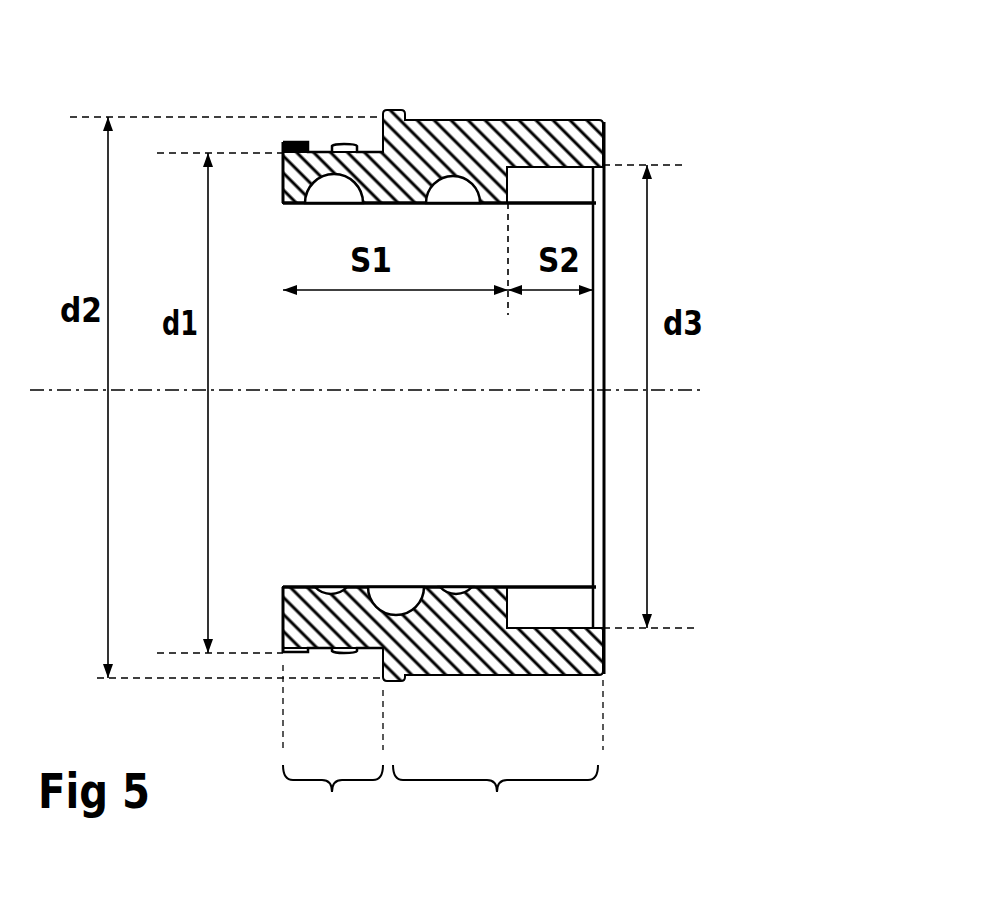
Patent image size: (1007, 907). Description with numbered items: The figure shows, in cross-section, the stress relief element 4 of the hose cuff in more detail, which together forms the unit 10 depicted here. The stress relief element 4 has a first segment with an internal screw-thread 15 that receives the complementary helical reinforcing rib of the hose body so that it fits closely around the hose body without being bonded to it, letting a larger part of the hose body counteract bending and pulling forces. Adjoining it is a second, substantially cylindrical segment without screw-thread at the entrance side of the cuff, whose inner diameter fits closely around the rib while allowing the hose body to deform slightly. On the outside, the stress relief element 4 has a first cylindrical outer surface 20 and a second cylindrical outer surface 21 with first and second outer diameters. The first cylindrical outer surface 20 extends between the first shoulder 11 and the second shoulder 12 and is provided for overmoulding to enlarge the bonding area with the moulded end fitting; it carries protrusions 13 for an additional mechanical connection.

The bearing assembly / wheel bearing unit 4 is at (726, 532).
The bearing ring unit 10 is at (573, 610).
The inner ring 11 is at (283, 163).
The outer ring flange 12 is at (383, 128).
The shoulder of inner ring 13 is at (295, 143).
The rolling element (ball) 15 is at (459, 190).
The first axial section 20 is at (333, 761).
The second axial section 21 is at (498, 769).